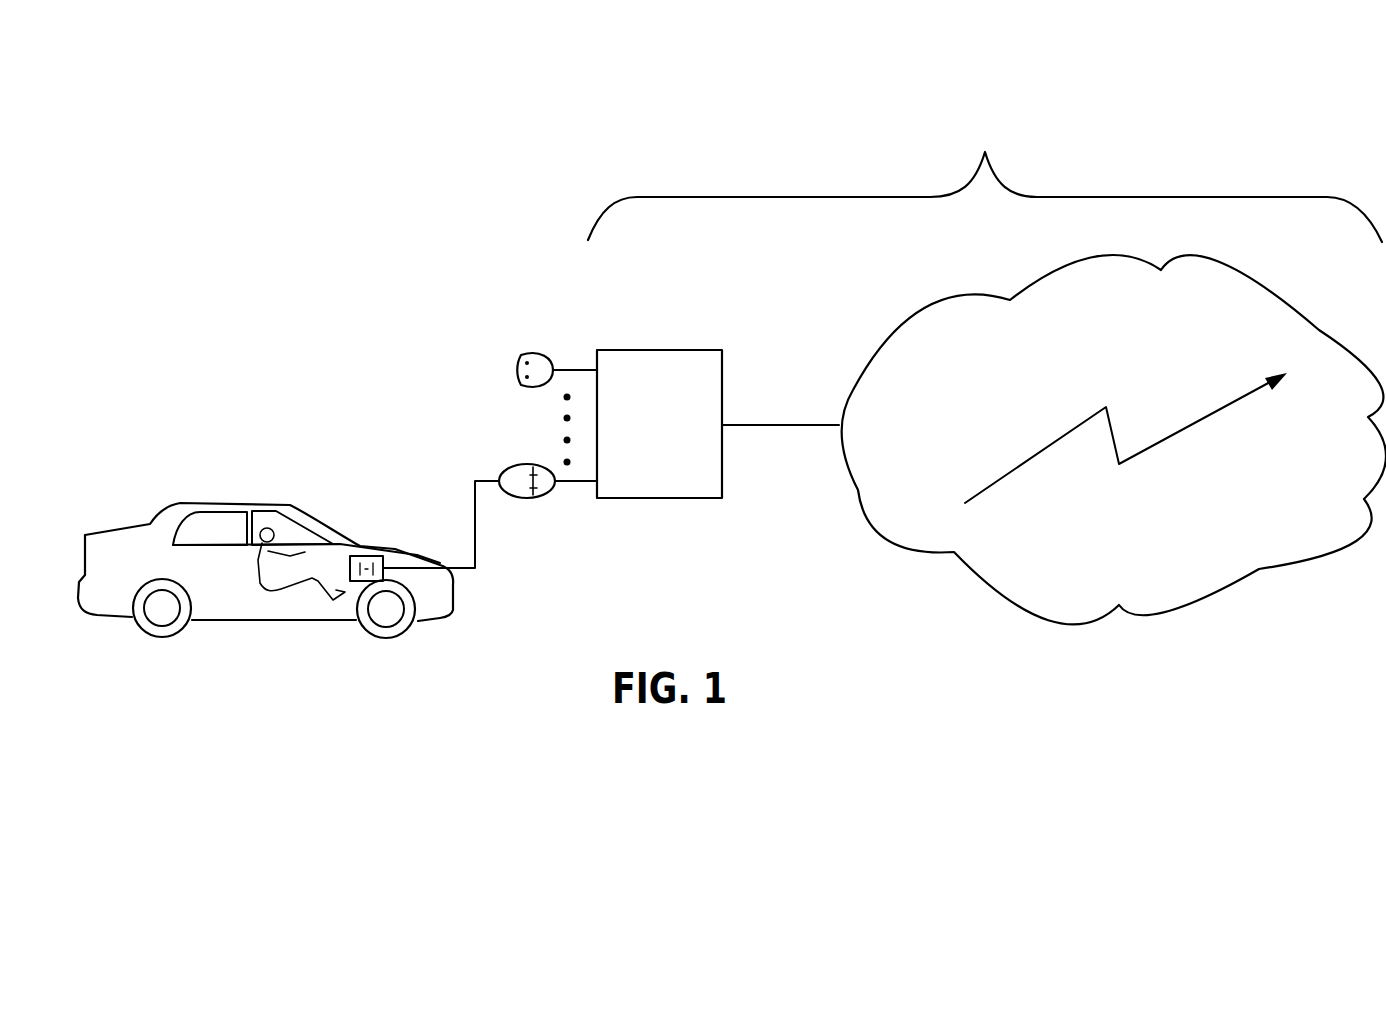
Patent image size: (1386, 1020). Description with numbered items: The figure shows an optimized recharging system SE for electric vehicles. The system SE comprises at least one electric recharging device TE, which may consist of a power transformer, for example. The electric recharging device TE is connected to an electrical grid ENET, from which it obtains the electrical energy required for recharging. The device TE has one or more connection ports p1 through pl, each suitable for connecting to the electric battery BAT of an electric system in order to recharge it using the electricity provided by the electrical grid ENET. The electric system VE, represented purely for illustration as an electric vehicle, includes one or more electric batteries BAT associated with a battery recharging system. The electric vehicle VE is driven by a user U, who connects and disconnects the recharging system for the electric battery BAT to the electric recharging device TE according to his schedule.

The electric system VE is at (107, 602).
The user U is at (261, 542).
The electric battery BAT is at (372, 560).
The connection port p1 is at (543, 494).
The connection port pl is at (542, 361).
The electric recharging device TE is at (718, 424).
The optimized recharging system SE is at (985, 172).
The electrical grid ENET is at (1181, 603).